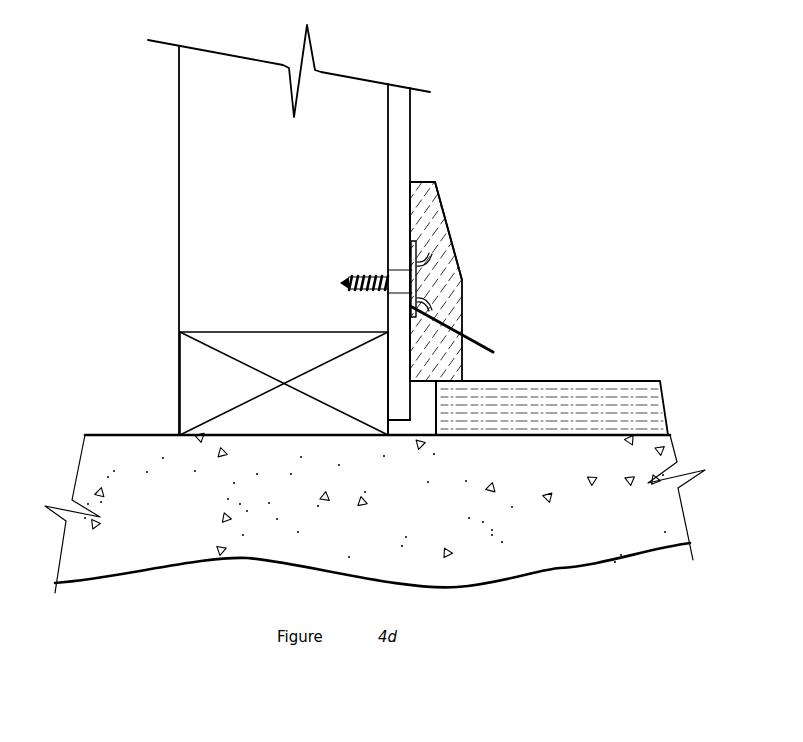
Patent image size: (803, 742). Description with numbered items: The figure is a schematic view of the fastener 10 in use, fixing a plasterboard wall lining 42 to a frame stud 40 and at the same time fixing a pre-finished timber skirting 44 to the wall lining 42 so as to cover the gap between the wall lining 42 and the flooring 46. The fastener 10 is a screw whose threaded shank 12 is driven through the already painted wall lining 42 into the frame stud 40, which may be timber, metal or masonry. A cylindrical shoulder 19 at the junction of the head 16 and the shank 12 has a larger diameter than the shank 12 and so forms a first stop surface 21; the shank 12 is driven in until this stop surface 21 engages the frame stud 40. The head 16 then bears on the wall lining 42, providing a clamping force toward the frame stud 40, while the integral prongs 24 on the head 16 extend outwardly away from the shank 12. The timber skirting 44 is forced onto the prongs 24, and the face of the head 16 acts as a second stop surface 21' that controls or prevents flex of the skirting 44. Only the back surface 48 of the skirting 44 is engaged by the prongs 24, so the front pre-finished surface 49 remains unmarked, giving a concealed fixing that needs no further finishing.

The fastener 10 is at (348, 266).
The shank 12 is at (331, 283).
The head 16 is at (427, 270).
The cylindrical shoulder 19 is at (386, 264).
The stop surface 21 is at (371, 310).
The second stop surface 21' is at (473, 338).
The prongs 24 is at (441, 252).
The frame stud 40 is at (372, 113).
The wall lining 42 is at (421, 147).
The timber skirting 44 is at (439, 215).
The flooring 46 is at (594, 391).
The back surface 48 is at (401, 200).
The front pre-finished surface 49 is at (454, 195).